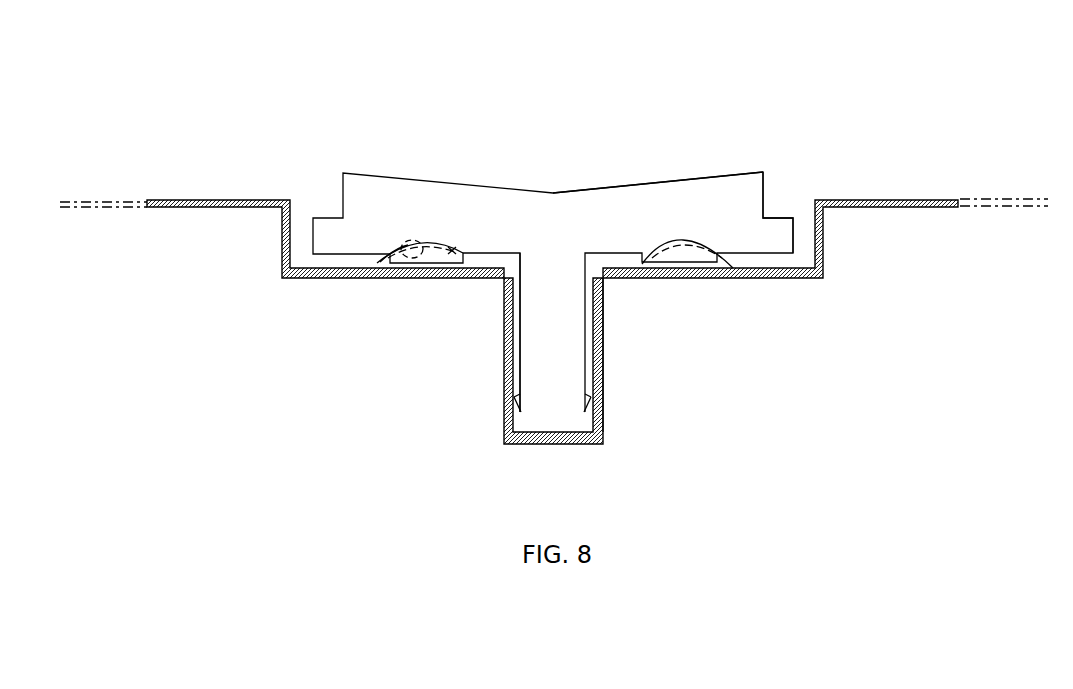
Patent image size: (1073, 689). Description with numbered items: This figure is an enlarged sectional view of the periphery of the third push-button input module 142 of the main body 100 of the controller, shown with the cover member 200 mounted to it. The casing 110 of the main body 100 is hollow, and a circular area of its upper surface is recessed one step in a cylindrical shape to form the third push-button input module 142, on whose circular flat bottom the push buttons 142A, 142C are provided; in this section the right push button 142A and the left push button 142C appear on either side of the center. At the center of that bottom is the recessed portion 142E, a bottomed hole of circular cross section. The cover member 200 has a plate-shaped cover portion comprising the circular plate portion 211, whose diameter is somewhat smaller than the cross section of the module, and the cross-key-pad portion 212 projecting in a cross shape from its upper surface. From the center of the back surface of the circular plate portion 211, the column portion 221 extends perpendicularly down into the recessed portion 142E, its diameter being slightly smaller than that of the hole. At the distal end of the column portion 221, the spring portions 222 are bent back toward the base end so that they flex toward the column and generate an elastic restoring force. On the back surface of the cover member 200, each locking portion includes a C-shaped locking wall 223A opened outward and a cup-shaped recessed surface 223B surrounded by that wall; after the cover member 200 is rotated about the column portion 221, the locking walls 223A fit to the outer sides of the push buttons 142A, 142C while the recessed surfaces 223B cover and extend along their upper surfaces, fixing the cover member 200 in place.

The main body 100 is at (957, 168).
The casing 110 is at (203, 198).
The third push-button input module 142 is at (290, 237).
The push button 142A is at (727, 267).
The push button 142C is at (379, 263).
The recessed portion 142E is at (606, 338).
The cover member 200 is at (432, 140).
The circular plate portion 211 is at (771, 228).
The cross-key-pad portion 212 is at (733, 187).
The column portion 221 is at (530, 332).
The spring portions 222 is at (512, 412).
The locking wall 223A is at (452, 250).
The recessed surface 223B is at (413, 240).